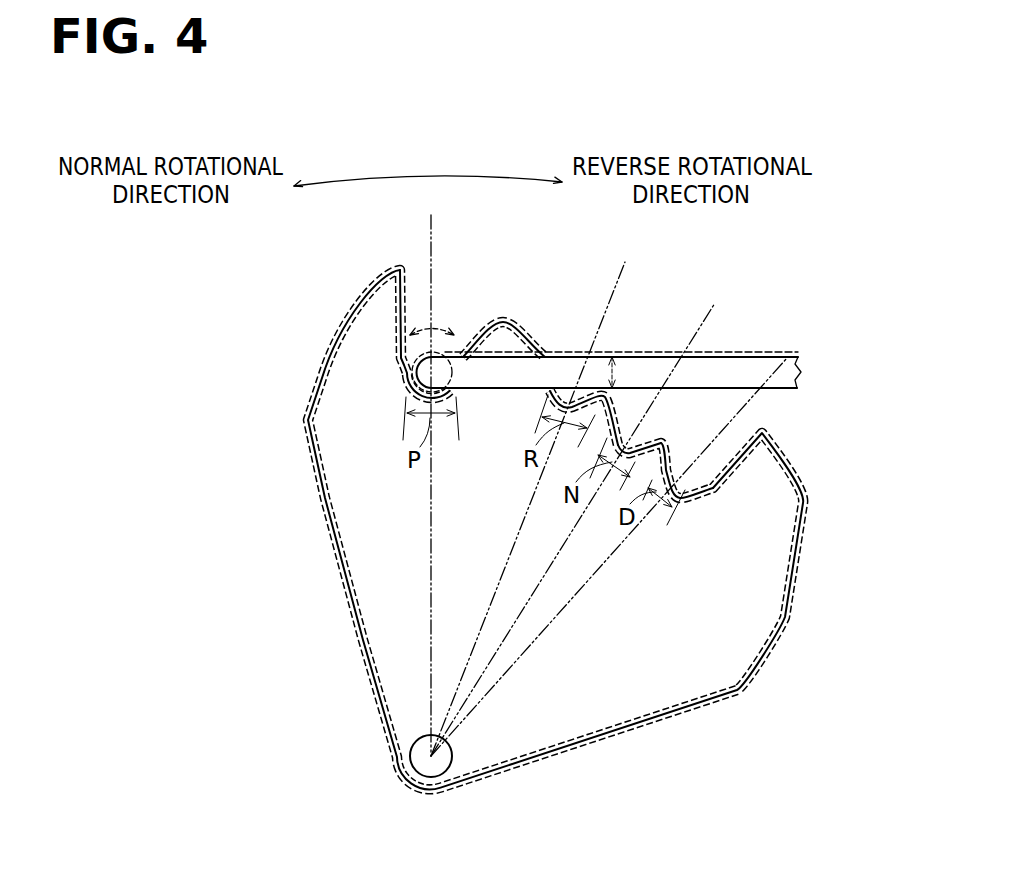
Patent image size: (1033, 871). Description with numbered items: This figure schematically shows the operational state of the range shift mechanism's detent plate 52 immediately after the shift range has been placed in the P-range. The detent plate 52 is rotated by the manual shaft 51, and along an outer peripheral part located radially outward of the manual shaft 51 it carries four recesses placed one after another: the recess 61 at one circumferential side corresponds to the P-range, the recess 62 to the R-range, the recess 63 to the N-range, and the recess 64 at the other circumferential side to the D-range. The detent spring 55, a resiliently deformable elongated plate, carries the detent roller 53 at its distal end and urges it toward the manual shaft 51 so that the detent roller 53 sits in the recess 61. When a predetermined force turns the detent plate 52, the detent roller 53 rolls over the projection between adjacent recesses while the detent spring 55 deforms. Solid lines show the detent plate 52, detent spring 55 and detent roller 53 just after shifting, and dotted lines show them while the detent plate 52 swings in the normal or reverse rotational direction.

The manual shaft 51 is at (410, 763).
The detent plate 52 is at (819, 456).
The detent roller 53 is at (431, 352).
The detent spring 55 is at (513, 367).
The recess 61 is at (411, 380).
The recess 62 is at (573, 407).
The recess 63 is at (621, 447).
The recess 64 is at (672, 494).